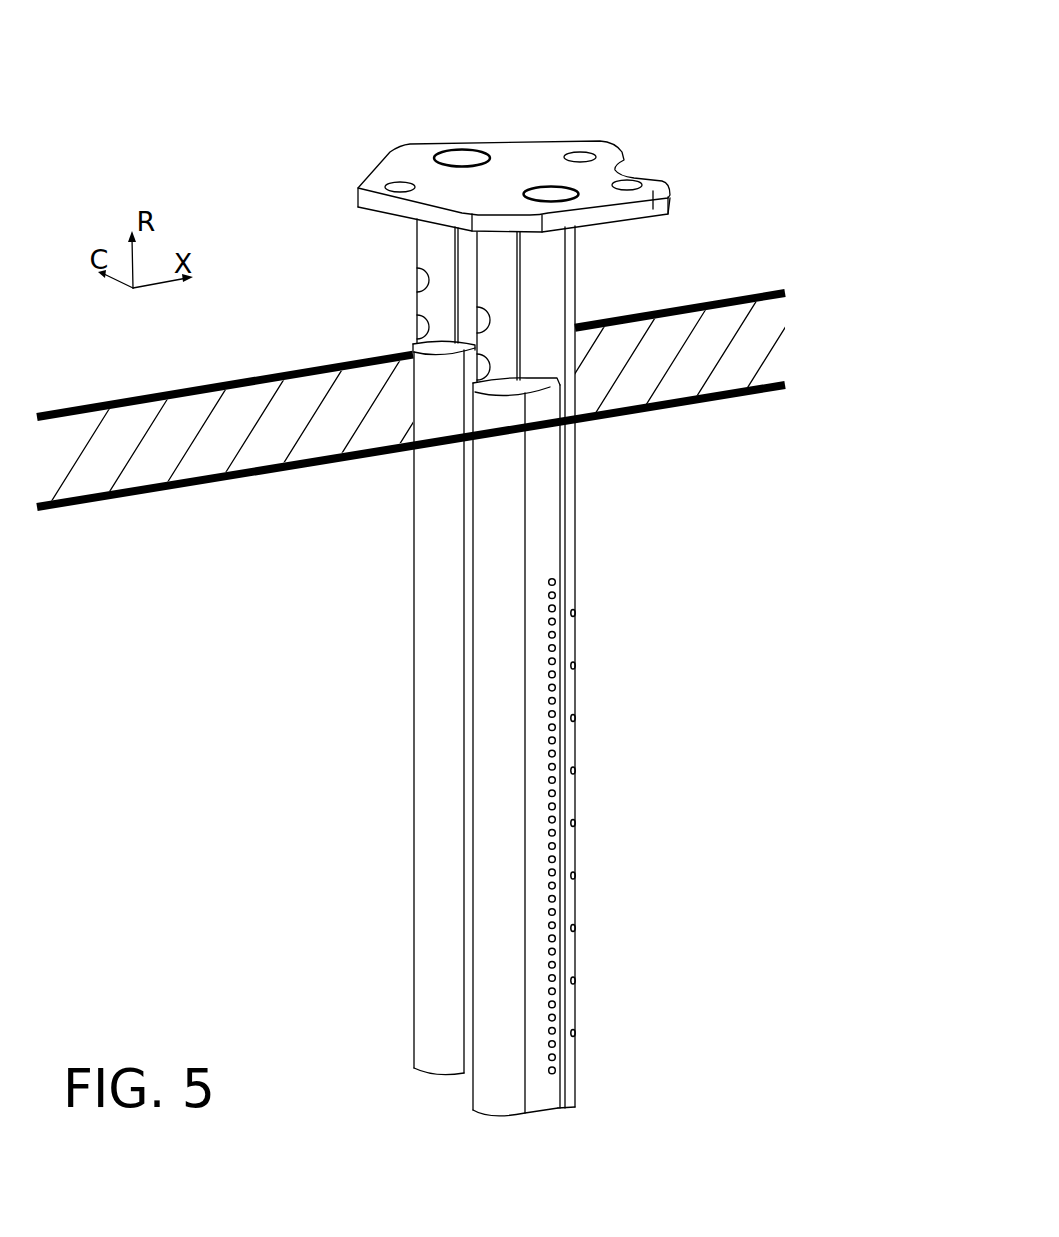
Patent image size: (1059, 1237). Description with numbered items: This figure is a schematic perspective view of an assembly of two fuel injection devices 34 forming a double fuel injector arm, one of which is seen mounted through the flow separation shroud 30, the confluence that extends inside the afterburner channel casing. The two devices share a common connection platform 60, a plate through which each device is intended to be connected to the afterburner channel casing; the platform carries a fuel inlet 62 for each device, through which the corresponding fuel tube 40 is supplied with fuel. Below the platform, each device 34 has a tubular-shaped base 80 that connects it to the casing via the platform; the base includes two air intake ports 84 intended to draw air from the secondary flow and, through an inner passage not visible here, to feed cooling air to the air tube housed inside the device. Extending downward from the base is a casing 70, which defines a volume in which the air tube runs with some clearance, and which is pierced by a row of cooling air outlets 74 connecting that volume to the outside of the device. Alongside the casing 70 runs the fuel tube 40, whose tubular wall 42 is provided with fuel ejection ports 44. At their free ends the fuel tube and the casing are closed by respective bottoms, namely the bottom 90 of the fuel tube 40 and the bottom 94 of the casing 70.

The flow separation shroud 30 is at (298, 413).
The fuel injection device 34 is at (468, 863).
The fuel tube 40 is at (644, 712).
The tubular wall 42 is at (575, 523).
The fuel ejection ports 44 is at (576, 768).
The connection platform 60 is at (514, 148).
The fuel inlet 62 is at (532, 188).
The casing 70 is at (487, 793).
The cooling air outlets 74 is at (553, 702).
The tubular-shaped base 80 is at (479, 300).
The air intake port 84 is at (480, 358).
The bottom of the fuel tube 90 is at (563, 1110).
The bottom of the casing 94 is at (508, 1118).